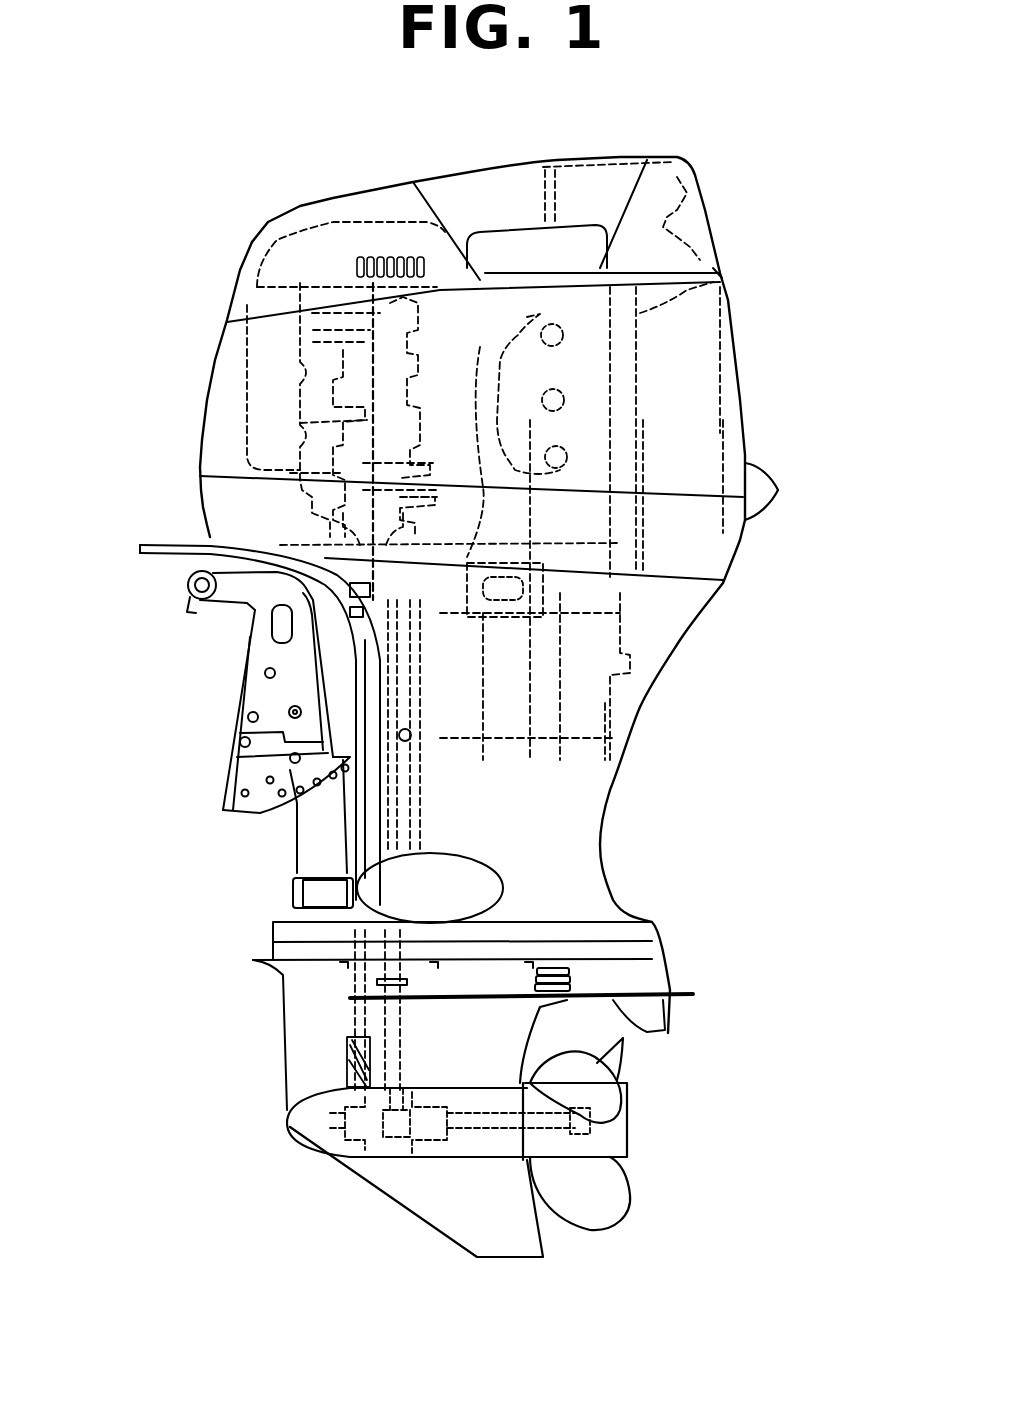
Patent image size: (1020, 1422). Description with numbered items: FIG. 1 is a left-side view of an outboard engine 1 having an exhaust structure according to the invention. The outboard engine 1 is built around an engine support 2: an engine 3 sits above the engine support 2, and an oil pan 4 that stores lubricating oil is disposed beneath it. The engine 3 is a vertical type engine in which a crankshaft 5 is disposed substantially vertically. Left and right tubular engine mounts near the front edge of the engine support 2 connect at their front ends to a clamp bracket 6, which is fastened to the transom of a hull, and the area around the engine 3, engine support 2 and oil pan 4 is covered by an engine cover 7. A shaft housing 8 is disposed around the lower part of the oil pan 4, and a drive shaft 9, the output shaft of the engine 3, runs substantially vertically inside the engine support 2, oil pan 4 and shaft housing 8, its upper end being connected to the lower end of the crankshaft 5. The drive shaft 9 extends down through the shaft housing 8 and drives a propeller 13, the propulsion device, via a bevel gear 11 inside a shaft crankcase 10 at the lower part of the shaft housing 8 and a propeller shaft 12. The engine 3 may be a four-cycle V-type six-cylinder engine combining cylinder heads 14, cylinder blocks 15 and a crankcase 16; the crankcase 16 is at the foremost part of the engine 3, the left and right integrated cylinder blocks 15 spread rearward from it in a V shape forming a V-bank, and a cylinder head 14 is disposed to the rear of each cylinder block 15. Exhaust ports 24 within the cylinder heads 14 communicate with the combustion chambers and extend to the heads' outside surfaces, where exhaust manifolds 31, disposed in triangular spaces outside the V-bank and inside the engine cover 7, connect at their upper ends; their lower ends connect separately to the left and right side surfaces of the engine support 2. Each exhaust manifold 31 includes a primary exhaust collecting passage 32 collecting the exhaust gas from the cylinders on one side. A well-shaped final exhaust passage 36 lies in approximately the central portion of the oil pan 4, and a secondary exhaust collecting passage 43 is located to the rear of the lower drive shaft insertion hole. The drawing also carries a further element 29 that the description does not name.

The outboard engine 1 is at (225, 210).
The engine support 2 is at (627, 593).
The engine 3 is at (248, 362).
The oil pan 4 is at (603, 703).
The crankshaft 5 is at (300, 423).
The clamp bracket 6 is at (233, 687).
The engine cover 7 is at (514, 340).
The shaft housing 8 is at (603, 833).
The drive shaft 9 is at (377, 807).
The shaft crankcase 10 is at (650, 968).
The bevel gear 11 is at (330, 1163).
The propeller shaft 12 is at (460, 1147).
The propeller 13 is at (615, 1135).
The cylinder heads 14 is at (548, 290).
The cylinder blocks 15 is at (458, 300).
The crankcase 16 is at (295, 493).
The exhaust ports 24 is at (567, 407).
The cover seam 29 is at (725, 267).
The exhaust manifolds 31 is at (568, 387).
The primary exhaust collecting passage 32 is at (510, 440).
The final exhaust passage 36 is at (607, 680).
The secondary exhaust collecting passage 43 is at (567, 592).